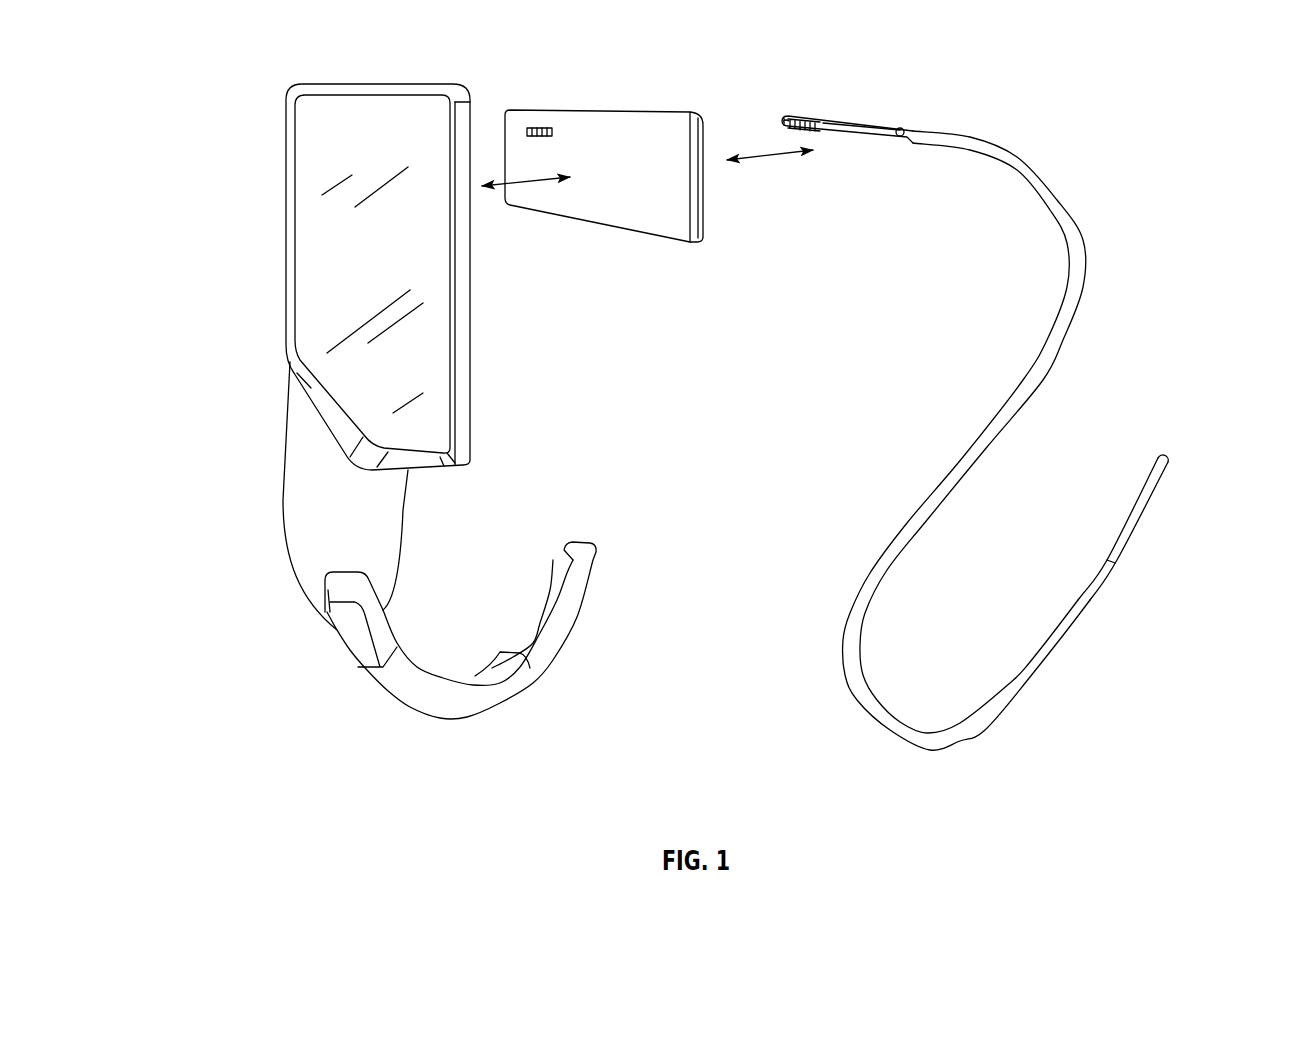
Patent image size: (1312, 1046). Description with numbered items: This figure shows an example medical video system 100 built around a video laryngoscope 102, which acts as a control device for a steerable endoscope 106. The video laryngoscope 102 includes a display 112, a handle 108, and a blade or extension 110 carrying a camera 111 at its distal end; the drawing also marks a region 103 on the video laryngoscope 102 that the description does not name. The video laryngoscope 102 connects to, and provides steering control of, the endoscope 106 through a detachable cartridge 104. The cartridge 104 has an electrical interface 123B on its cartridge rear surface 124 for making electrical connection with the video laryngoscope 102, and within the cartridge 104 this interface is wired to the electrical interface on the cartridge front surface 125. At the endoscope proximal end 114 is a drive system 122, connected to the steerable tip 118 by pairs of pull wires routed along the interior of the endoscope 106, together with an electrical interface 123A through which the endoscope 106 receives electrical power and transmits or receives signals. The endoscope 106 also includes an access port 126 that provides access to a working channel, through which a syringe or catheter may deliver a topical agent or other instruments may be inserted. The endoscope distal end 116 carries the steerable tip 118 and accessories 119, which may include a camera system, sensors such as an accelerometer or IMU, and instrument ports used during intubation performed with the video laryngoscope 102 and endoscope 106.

The medical video system 100 is at (211, 850).
The video laryngoscope 102 is at (235, 149).
The receiving cavity 103 is at (489, 345).
The detachable cartridge 104 is at (629, 285).
The steerable endoscope 106 is at (1025, 160).
The handle 108 is at (297, 540).
The blade or extension 110 is at (383, 686).
The camera 111 is at (538, 643).
The display 112 is at (312, 287).
The endoscope proximal end 114 is at (947, 79).
The endoscope distal end 116 is at (1210, 604).
The steerable tip 118 is at (1145, 503).
The accessories 119 is at (1169, 450).
The drive system 122 is at (880, 127).
The electrical interface 123A is at (813, 115).
The electrical interface 123B is at (543, 116).
The cartridge rear surface 124 is at (605, 218).
The cartridge front surface 125 is at (729, 206).
The access port 126 is at (776, 119).